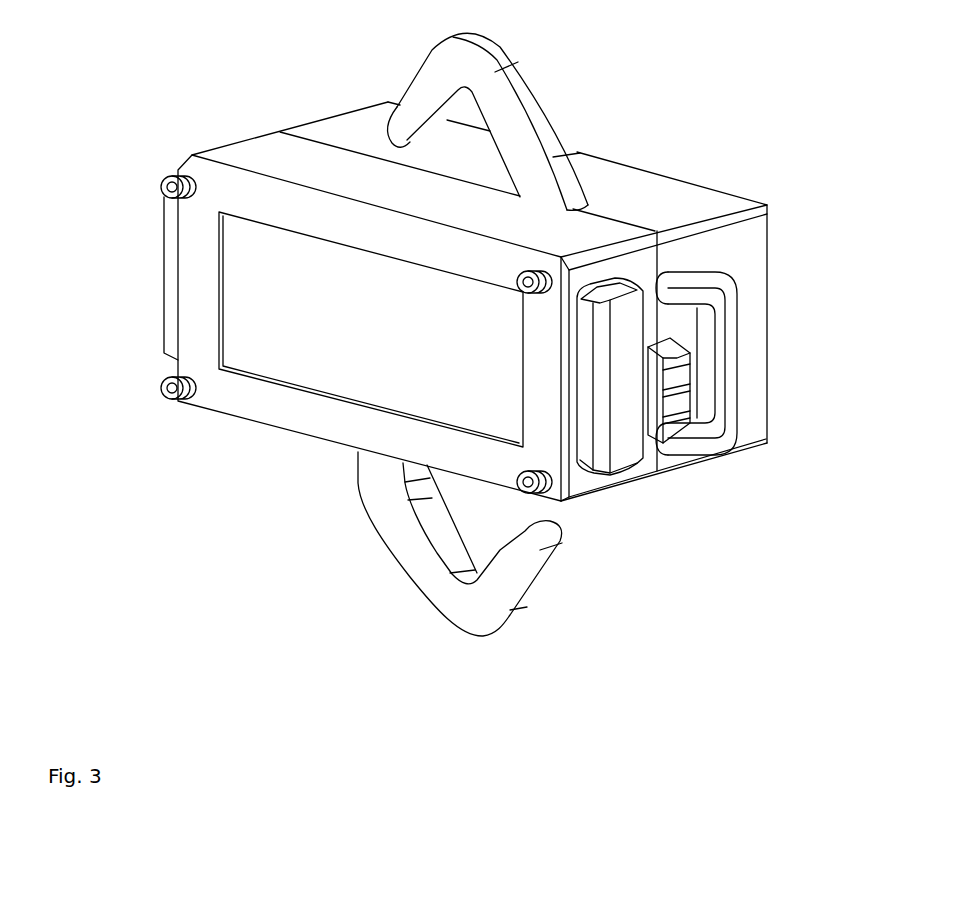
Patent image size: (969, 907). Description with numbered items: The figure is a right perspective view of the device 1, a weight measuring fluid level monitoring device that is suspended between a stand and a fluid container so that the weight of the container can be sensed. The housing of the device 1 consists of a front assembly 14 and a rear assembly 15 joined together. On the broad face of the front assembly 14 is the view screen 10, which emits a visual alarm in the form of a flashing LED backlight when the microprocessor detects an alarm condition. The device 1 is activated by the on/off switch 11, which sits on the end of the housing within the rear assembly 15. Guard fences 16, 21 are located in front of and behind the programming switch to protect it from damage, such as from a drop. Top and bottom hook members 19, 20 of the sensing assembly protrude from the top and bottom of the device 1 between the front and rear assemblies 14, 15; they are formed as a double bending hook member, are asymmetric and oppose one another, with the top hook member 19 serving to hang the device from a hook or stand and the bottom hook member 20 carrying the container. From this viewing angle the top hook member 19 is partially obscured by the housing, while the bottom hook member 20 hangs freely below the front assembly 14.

The device 1 is at (282, 133).
The view screen 10 is at (232, 272).
The on/off switch 11 is at (683, 378).
The front assembly 14 is at (237, 157).
The rear assembly 15 is at (700, 197).
The guard fence 16 is at (627, 322).
The top hook member 19 is at (467, 53).
The bottom hook member 20 is at (485, 622).
The guard fence 21 is at (727, 447).